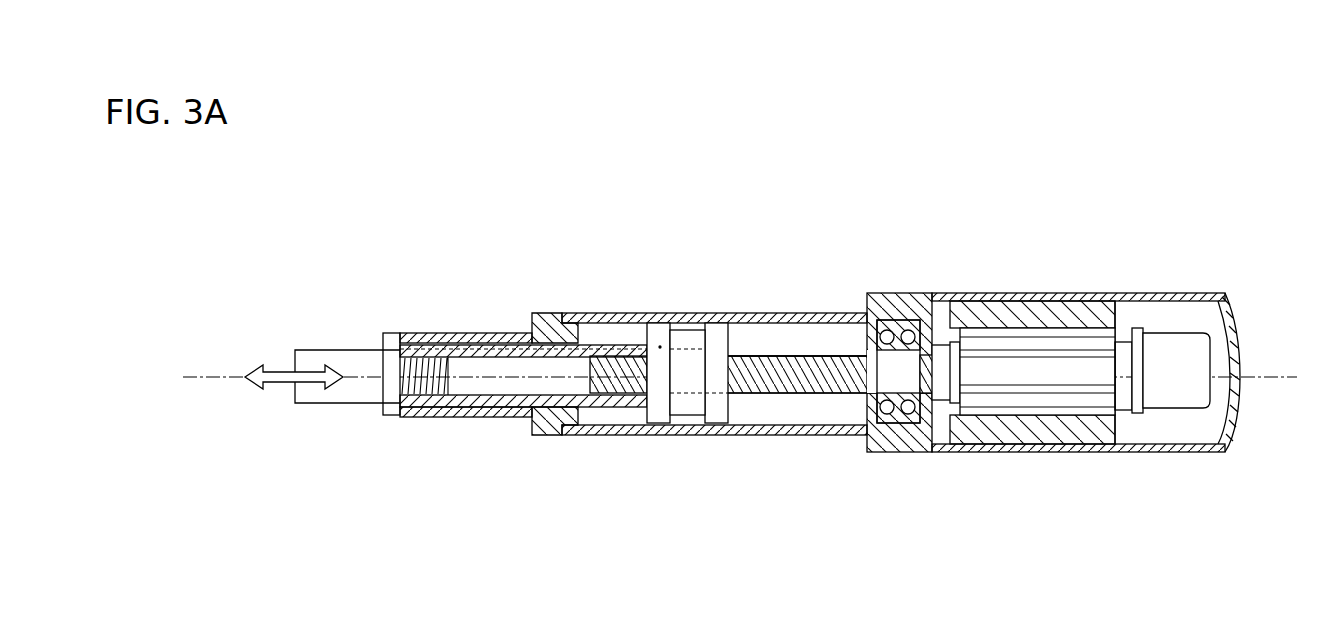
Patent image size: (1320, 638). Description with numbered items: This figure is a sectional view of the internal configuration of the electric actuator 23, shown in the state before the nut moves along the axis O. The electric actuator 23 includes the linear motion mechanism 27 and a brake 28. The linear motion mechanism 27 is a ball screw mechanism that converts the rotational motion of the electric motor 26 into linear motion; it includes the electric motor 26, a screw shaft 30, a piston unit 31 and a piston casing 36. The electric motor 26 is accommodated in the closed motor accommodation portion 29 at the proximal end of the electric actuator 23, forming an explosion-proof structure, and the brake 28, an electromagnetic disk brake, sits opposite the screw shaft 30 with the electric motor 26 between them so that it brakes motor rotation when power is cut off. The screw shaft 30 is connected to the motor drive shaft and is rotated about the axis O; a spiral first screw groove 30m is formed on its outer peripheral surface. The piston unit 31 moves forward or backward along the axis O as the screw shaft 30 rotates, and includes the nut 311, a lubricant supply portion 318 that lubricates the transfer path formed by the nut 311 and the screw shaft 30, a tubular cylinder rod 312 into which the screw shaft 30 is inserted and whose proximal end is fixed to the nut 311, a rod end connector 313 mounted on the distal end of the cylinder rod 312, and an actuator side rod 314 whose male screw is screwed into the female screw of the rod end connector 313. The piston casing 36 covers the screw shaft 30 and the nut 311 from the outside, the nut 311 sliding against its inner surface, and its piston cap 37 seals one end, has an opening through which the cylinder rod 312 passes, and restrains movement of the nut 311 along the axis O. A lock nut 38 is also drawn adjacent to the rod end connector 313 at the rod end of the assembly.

The electric actuator 23 is at (915, 262).
The electric motor 26 is at (1033, 330).
The linear motion mechanism 27 is at (779, 330).
The brake 28 is at (1170, 333).
The motor accommodation portion 29 is at (1042, 453).
The screw shaft 30 is at (764, 351).
The first screw groove 30m is at (835, 357).
The piston unit 31 is at (687, 360).
The nut 311 is at (695, 413).
The cylinder rod 312 is at (630, 330).
The rod end connector 313 is at (452, 383).
The actuator side rod 314 is at (343, 350).
The lubricant supply portion 318 is at (660, 347).
The piston casing 36 is at (590, 313).
The piston cap 37 is at (538, 313).
The lock nut 38 is at (413, 333).
The axis O is at (1273, 368).